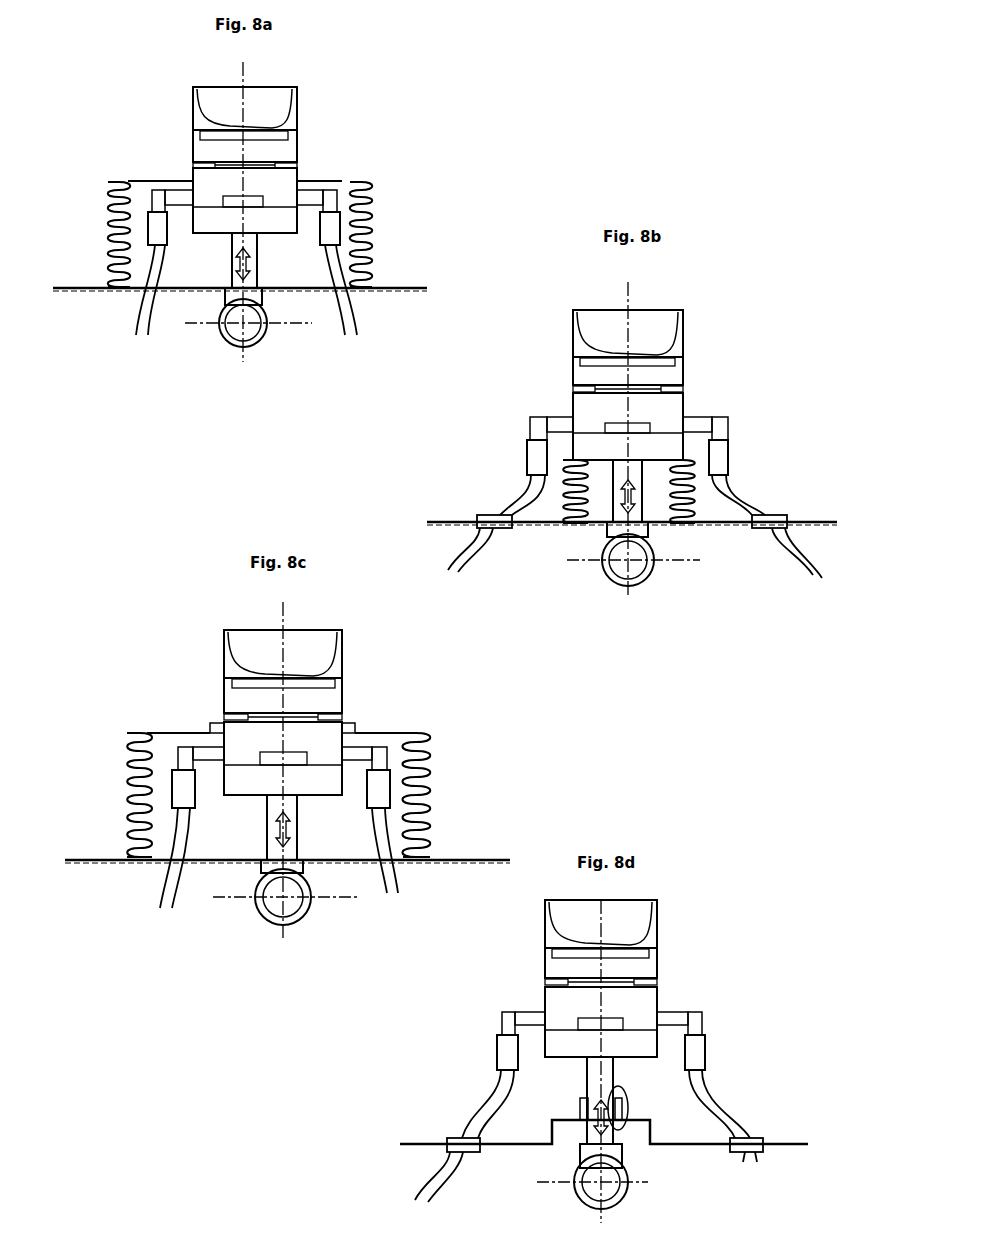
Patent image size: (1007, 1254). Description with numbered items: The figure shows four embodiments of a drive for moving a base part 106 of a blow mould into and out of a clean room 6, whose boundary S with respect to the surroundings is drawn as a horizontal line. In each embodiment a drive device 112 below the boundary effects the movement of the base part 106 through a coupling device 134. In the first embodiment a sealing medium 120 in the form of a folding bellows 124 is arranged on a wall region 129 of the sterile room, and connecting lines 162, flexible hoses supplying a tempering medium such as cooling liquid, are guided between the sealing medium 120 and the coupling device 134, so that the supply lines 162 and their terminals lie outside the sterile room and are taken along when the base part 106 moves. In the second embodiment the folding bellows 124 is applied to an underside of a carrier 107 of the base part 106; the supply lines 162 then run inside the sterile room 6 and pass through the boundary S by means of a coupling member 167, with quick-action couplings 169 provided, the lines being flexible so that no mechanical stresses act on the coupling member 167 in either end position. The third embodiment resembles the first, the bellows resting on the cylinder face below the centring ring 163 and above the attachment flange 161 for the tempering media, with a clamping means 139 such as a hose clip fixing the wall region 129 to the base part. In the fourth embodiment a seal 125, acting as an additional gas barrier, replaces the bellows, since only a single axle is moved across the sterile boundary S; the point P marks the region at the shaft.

In FIG. 8A, the clean room 6 is at (254, 212).
In FIG. 8A, the base part 106 is at (290, 125).
In FIG. 8B, the base part 106 is at (670, 377).
In FIG. 8C, the base part 106 is at (337, 672).
In FIG. 8D, the base part 106 is at (653, 935).
In FIG. 8B, the carrier 107 is at (667, 448).
In FIG. 8A, the drive device 112 is at (262, 323).
In FIG. 8B, the drive device 112 is at (650, 570).
In FIG. 8C, the drive device 112 is at (305, 907).
In FIG. 8D, the drive device 112 is at (622, 1193).
In FIG. 8A, the sealing medium 120 is at (97, 262).
In FIG. 8B, the sealing medium 120 is at (677, 505).
In FIG. 8C, the sealing medium 120 is at (427, 795).
In FIG. 8A, the folding bellows 124 is at (368, 220).
In FIG. 8B, the folding bellows 124 is at (568, 505).
In FIG. 8C, the folding bellows 124 is at (140, 780).
In FIG. 8D, the seal 125 is at (630, 1107).
In FIG. 8A, the wall region 129 is at (158, 181).
In FIG. 8C, the wall region 129 is at (167, 733).
In FIG. 8A, the coupling device 134 is at (257, 262).
In FIG. 8B, the coupling device 134 is at (638, 476).
In FIG. 8C, the coupling device 134 is at (290, 827).
In FIG. 8D, the coupling device 134 is at (600, 1100).
In FIG. 8C, the clamping means 139 is at (350, 728).
In FIG. 8A, the attachment flange 161 is at (287, 195).
In FIG. 8C, the attachment flange 161 is at (327, 740).
In FIG. 8D, the attachment flange 161 is at (601, 1022).
In FIG. 8A, the supply lines 162 is at (313, 200).
In FIG. 8B, the supply lines 162 is at (722, 430).
In FIG. 8C, the supply lines 162 is at (383, 843).
In FIG. 8D, the supply lines 162 is at (695, 1022).
In FIG. 8A, the centring ring 163 is at (273, 165).
In FIG. 8B, the centring ring 163 is at (628, 389).
In FIG. 8C, the centring ring 163 is at (223, 712).
In FIG. 8D, the centring ring 163 is at (601, 982).
In FIG. 8B, the coupling member 167 is at (787, 522).
In FIG. 8D, the coupling member 167 is at (748, 1142).
In FIG. 8B, the quick-action couplings 169 is at (722, 458).
In FIG. 8B, the pivot P is at (615, 491).
In FIG. 8A, the sterile room boundary S is at (402, 288).
In FIG. 8B, the sterile room boundary S is at (632, 523).
In FIG. 8C, the sterile room boundary S is at (472, 860).
In FIG. 8D, the sterile room boundary S is at (780, 1144).